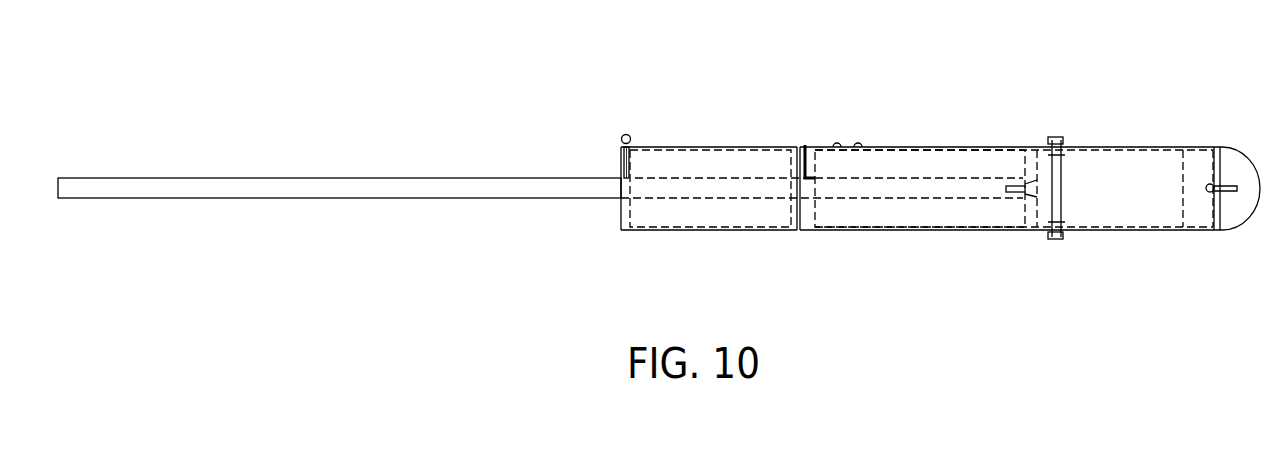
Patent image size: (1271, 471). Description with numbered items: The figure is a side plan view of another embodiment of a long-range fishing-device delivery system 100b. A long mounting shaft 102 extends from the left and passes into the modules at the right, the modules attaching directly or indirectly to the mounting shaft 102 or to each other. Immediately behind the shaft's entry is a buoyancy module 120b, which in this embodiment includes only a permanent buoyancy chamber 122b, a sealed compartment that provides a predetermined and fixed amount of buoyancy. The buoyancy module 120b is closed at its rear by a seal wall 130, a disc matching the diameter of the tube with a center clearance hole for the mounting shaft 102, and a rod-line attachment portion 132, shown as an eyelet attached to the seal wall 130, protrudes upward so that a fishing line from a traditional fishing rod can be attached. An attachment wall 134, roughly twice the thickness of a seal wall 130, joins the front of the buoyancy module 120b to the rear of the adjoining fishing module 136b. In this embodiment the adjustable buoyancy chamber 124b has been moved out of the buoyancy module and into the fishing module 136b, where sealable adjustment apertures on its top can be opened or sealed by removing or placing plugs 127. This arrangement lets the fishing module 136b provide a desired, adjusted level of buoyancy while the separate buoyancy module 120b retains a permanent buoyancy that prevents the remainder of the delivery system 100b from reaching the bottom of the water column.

The long-range fishing-device delivery system 100b is at (370, 99).
The mounting shaft 102 is at (237, 201).
The buoyancy module 120b is at (664, 193).
The permanent buoyancy chamber 122b is at (697, 173).
The adjustable buoyancy chamber 124b is at (925, 173).
The plugs 127 is at (846, 132).
The seal wall 130 is at (619, 215).
The rod-line attachment portion 132 is at (620, 134).
The attachment wall 134 is at (808, 228).
The fishing module 136b is at (1030, 142).